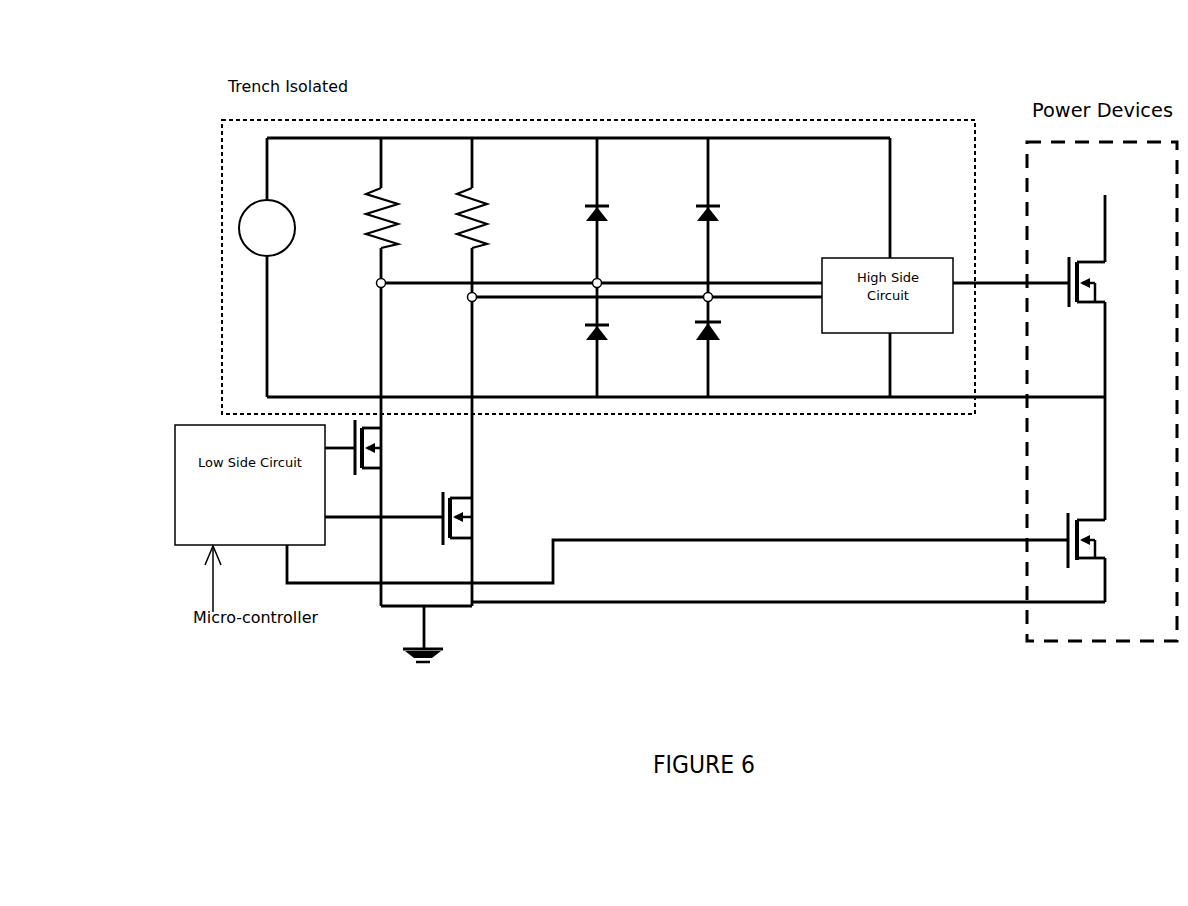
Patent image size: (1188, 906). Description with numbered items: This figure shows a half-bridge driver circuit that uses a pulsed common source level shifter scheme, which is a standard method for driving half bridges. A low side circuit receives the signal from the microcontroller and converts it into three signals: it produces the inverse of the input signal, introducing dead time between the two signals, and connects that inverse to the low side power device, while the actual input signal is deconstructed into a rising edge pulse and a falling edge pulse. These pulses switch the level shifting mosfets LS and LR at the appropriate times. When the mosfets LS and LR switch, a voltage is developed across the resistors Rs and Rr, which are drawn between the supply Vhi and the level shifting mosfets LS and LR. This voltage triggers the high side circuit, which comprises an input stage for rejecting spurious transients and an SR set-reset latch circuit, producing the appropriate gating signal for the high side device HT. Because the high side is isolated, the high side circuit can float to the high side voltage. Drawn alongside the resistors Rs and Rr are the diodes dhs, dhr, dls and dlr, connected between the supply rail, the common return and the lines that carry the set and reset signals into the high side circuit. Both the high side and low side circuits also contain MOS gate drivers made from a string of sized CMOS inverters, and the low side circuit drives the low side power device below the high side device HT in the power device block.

The high voltage supply Vhi is at (267, 228).
The resistor Rs is at (396, 193).
The resistor Rr is at (488, 193).
The high side set diode dhs is at (576, 210).
The high side reset diode dhr is at (683, 217).
The low side set diode dls is at (576, 340).
The low side reset diode dlr is at (684, 347).
The level shifting mosfet LS is at (382, 447).
The level shifting mosfet LR is at (475, 518).
The high side power transistor HT is at (1094, 237).